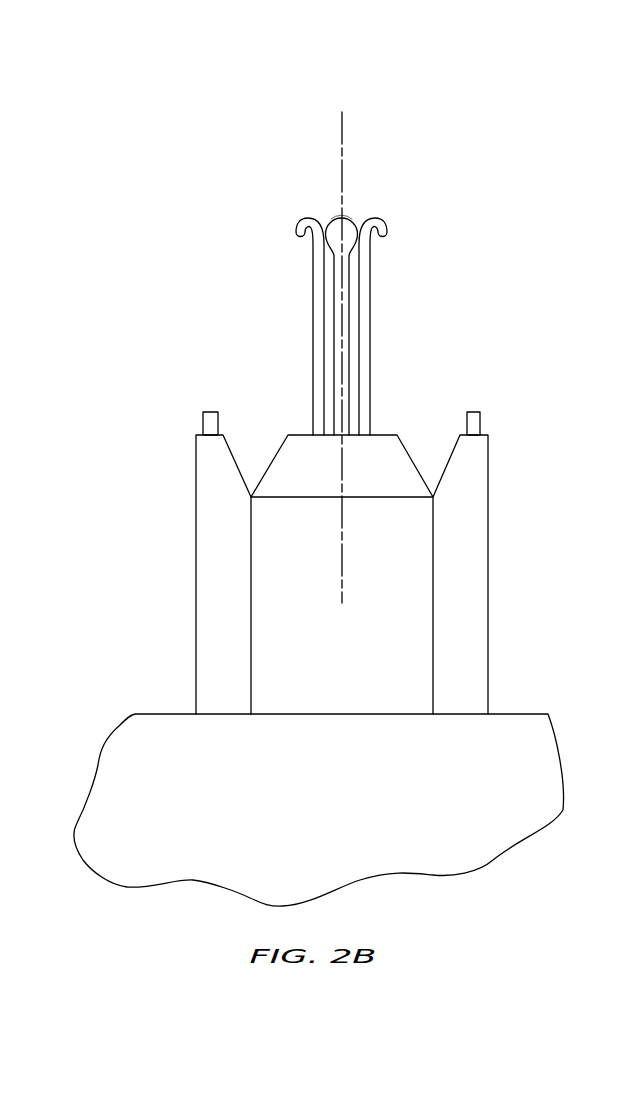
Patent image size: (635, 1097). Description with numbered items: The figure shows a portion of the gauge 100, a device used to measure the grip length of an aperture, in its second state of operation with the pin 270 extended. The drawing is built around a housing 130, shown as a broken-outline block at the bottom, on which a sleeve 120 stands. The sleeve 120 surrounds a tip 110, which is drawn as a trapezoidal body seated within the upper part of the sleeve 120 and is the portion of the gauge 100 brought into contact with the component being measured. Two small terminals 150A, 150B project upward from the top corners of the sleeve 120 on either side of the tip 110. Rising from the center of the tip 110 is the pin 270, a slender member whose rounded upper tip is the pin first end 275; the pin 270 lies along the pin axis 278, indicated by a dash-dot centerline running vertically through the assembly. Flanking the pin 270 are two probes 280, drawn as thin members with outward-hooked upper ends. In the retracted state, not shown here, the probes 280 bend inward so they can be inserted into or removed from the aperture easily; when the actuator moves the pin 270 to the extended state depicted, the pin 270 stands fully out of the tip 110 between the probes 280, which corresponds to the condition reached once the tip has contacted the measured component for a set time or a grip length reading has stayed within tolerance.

The gauge 100 is at (160, 582).
The tip 110 is at (400, 442).
The sleeve 120 is at (488, 538).
The housing 130 is at (316, 797).
The terminal 150A is at (473, 412).
The terminal 150B is at (210, 412).
The pin 270 is at (334, 298).
The pin first end 275 is at (333, 218).
The pin axis 278 is at (342, 143).
The probes 280 is at (450, 192).